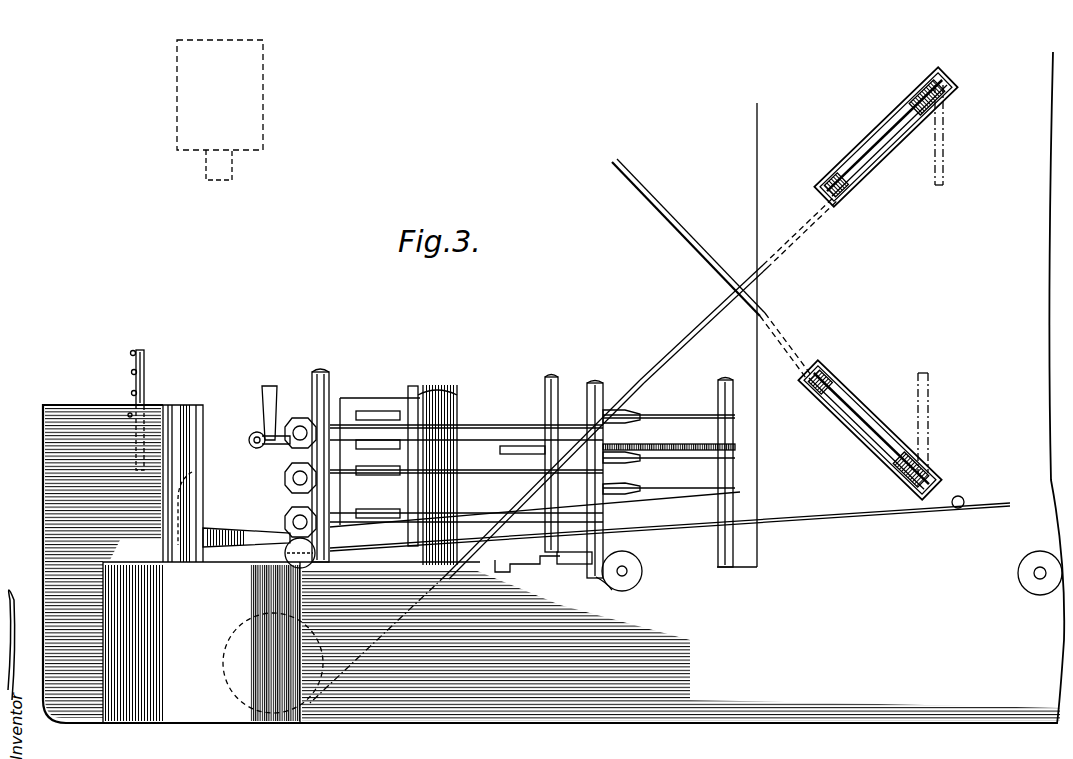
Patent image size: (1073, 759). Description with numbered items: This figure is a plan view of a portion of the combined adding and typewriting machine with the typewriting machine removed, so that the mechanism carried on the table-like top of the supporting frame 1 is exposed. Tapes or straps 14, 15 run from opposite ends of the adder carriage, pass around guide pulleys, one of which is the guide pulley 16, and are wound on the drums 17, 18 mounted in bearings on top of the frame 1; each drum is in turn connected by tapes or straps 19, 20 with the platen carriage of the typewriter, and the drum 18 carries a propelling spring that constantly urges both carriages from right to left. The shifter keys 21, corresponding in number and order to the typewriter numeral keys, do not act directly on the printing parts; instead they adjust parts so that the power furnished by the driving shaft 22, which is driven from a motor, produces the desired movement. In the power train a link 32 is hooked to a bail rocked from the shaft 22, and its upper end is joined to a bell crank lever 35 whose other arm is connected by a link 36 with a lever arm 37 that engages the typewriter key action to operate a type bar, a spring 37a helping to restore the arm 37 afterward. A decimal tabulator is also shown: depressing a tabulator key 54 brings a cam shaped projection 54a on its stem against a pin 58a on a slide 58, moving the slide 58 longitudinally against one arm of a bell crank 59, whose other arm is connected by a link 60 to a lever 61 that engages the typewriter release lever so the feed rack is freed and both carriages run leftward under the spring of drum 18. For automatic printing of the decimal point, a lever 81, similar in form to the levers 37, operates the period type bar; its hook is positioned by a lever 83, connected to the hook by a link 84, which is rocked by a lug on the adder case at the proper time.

The supporting frame 1 is at (553, 388).
The tape 14 is at (684, 343).
The tape 15 is at (670, 224).
The guide pulley 16 is at (224, 648).
The drum 17 is at (855, 150).
The drum 18 is at (856, 397).
The tape 19 is at (945, 153).
The tape 20 is at (931, 390).
The shifter key 21 is at (296, 418).
The driving shaft 22 is at (224, 175).
The link 32 is at (362, 413).
The bell crank lever 35 is at (480, 422).
The link 36 is at (568, 420).
The lever arm 37 is at (652, 412).
The spring 37a is at (656, 446).
The tabulator key 54 is at (130, 352).
The cam shaped projection 54a is at (134, 372).
The slide 58 is at (146, 378).
The pin 58a is at (134, 393).
The bell crank 59 is at (196, 472).
The link 60 is at (237, 533).
The lever 61 is at (520, 570).
The lever 81 is at (543, 463).
The lever 83 is at (262, 395).
The link 84 is at (295, 450).